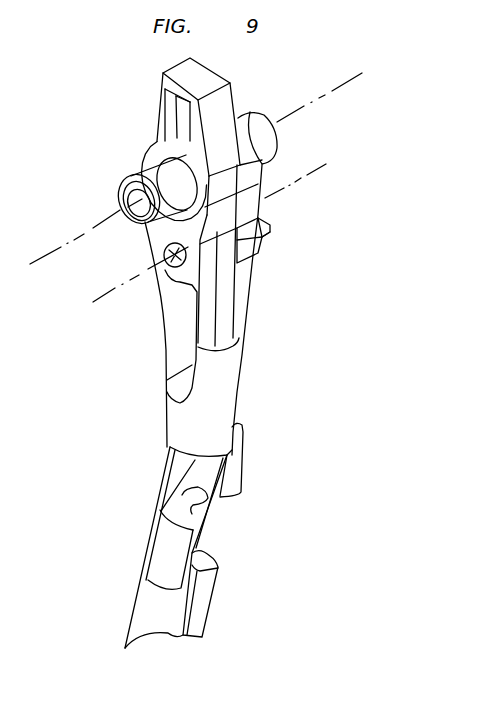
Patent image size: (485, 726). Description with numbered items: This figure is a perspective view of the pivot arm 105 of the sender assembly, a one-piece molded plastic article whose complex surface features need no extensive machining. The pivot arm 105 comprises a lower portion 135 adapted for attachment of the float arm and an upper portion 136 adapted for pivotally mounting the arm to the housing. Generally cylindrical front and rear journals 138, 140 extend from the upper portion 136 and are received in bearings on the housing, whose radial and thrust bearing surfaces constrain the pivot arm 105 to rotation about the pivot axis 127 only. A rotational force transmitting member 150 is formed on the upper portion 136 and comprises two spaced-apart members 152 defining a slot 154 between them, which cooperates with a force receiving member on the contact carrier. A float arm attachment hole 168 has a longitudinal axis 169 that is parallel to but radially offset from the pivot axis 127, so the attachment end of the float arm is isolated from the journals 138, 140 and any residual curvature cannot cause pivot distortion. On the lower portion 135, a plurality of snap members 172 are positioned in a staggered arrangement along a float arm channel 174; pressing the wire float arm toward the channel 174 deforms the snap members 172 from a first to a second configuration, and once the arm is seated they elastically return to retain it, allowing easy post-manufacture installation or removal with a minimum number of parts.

The pivot arm 105 is at (111, 380).
The pivot axis 127 is at (338, 96).
The lower portion 135 is at (278, 497).
The upper portion 136 is at (246, 213).
The front journal 138 is at (155, 180).
The rear journal 140 is at (257, 122).
The rotational force transmitting member 150 is at (160, 57).
The spaced-apart members 152 is at (160, 100).
The slot 154 is at (184, 117).
The float arm attachment hole 168 is at (167, 307).
The longitudinal axis 169 is at (314, 177).
The snap members 172 is at (236, 462).
The float arm channel 174 is at (158, 648).